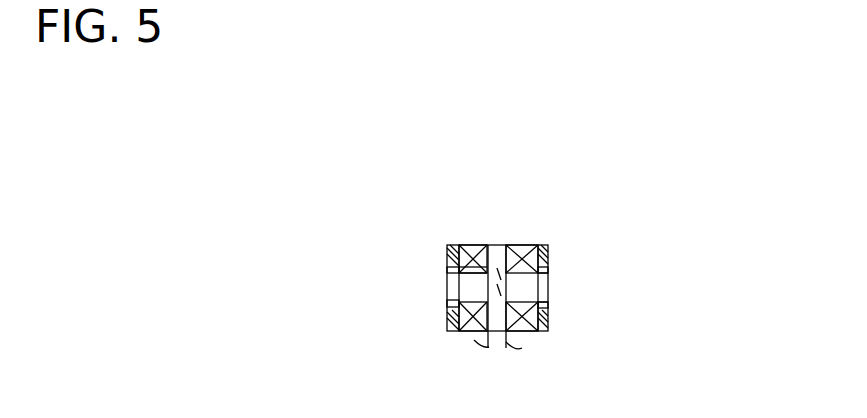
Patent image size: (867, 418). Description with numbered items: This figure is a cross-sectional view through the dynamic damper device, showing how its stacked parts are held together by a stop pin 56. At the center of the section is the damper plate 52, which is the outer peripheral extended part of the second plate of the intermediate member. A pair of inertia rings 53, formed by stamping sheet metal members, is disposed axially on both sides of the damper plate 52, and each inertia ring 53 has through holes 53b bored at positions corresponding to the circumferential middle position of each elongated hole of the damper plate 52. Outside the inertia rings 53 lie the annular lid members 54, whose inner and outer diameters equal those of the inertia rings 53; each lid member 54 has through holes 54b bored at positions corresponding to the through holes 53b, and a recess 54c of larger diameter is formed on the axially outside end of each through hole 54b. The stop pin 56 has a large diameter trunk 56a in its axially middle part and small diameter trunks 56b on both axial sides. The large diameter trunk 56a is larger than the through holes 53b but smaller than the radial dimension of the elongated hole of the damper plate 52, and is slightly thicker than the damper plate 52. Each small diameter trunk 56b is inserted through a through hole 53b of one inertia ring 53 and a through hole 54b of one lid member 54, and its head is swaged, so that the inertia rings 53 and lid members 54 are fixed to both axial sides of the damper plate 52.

The damper plate 52 is at (492, 245).
The inertia rings 53 is at (475, 245).
The through holes 53b is at (468, 280).
The lid members 54 is at (465, 322).
The through holes 54b is at (459, 298).
The housing step portion 54c is at (459, 281).
The stop pins 56 is at (552, 284).
The large diameter trunk 56a is at (494, 328).
The small diameter trunks 56b is at (528, 292).